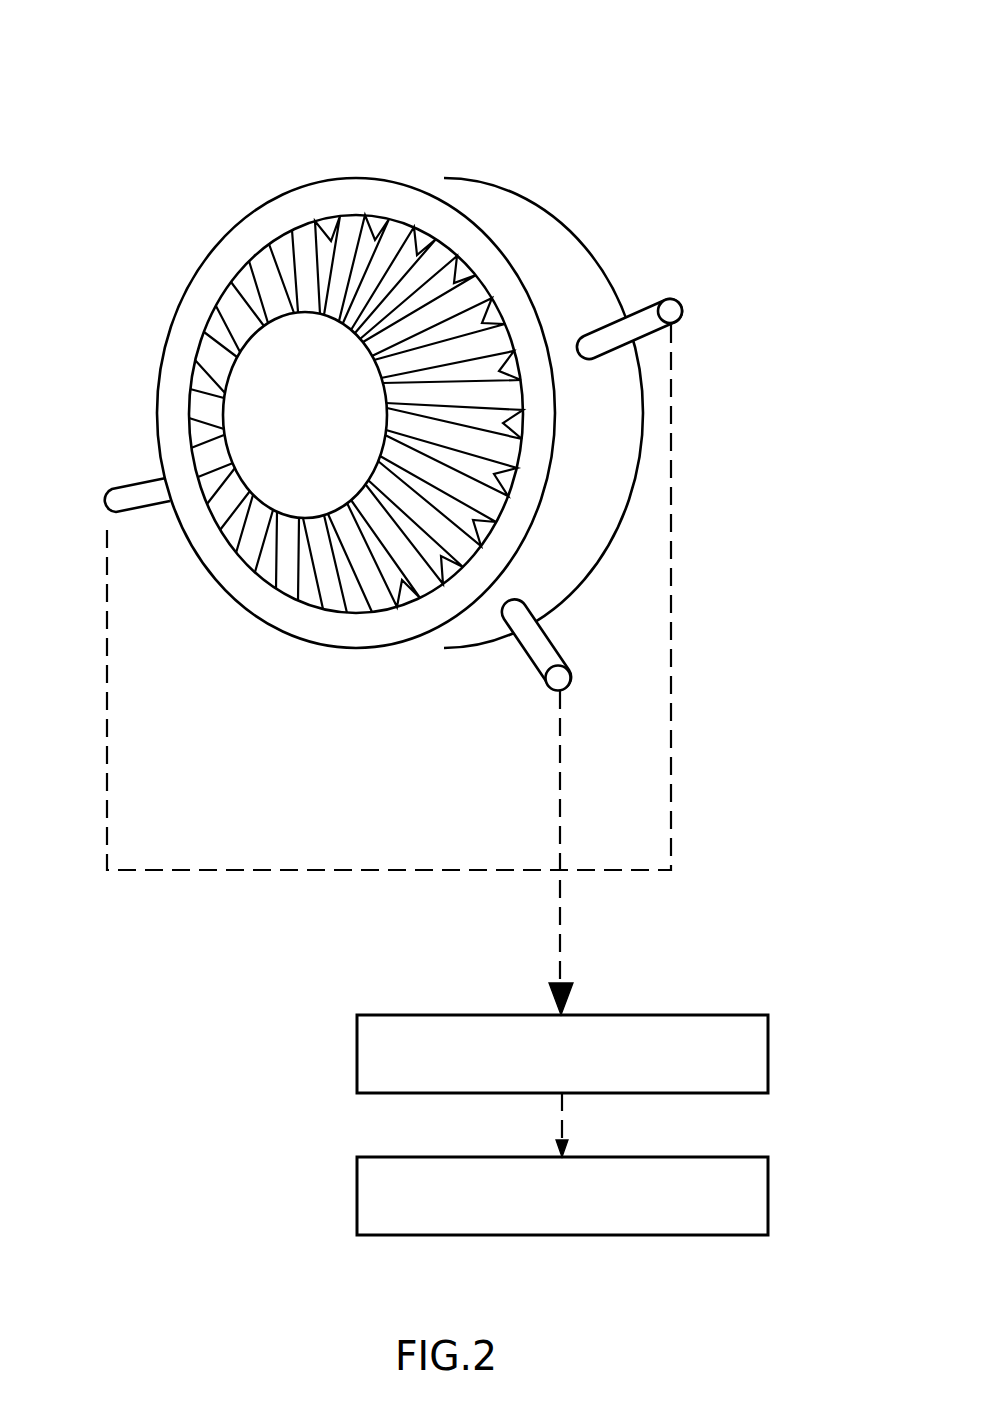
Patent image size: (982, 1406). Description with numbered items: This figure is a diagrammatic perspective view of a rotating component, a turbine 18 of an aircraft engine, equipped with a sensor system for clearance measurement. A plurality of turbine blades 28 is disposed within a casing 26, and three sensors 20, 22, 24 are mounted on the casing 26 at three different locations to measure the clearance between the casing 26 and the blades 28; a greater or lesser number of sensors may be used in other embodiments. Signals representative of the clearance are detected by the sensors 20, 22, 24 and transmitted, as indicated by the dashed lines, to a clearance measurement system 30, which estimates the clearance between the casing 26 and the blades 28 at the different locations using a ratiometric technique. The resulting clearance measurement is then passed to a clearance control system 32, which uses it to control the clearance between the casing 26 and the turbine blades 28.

The turbine 18 is at (130, 58).
The sensor 20 is at (665, 301).
The sensor 22 is at (552, 644).
The sensor 24 is at (150, 508).
The casing 26 is at (450, 178).
The turbine blades 28 is at (191, 418).
The clearance measurement system 30 is at (768, 1052).
The clearance control system 32 is at (768, 1193).